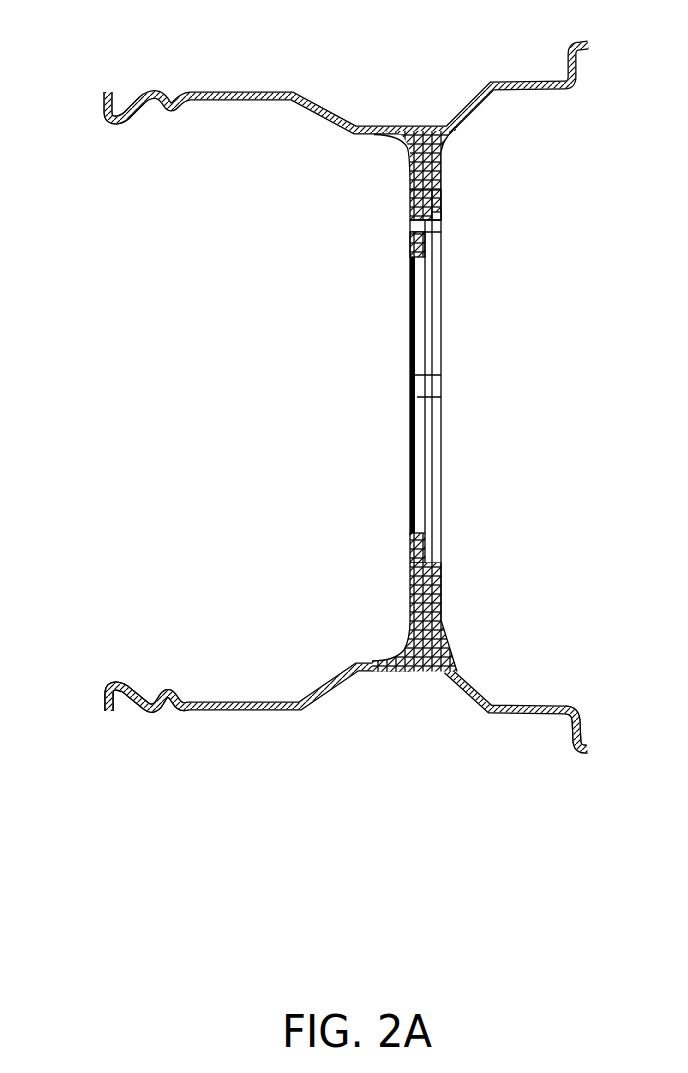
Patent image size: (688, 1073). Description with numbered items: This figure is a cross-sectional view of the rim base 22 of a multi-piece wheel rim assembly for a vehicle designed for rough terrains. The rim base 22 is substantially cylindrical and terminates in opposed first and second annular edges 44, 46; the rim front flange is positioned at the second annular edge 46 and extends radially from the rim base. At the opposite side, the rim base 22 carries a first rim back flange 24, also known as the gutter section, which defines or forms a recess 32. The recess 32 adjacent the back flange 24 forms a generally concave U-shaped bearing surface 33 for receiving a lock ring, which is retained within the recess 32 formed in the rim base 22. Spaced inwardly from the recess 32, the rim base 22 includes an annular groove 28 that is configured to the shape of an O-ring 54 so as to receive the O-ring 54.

The rim base 22 is at (318, 704).
The first rim back flange 24 is at (115, 124).
The annular groove 28 is at (181, 709).
The recess 32 is at (141, 729).
The U-shaped bearing surface 33 is at (120, 714).
The first annular edge 44 is at (108, 713).
The second annular edge 46 is at (582, 753).
The O-ring 54 is at (104, 699).